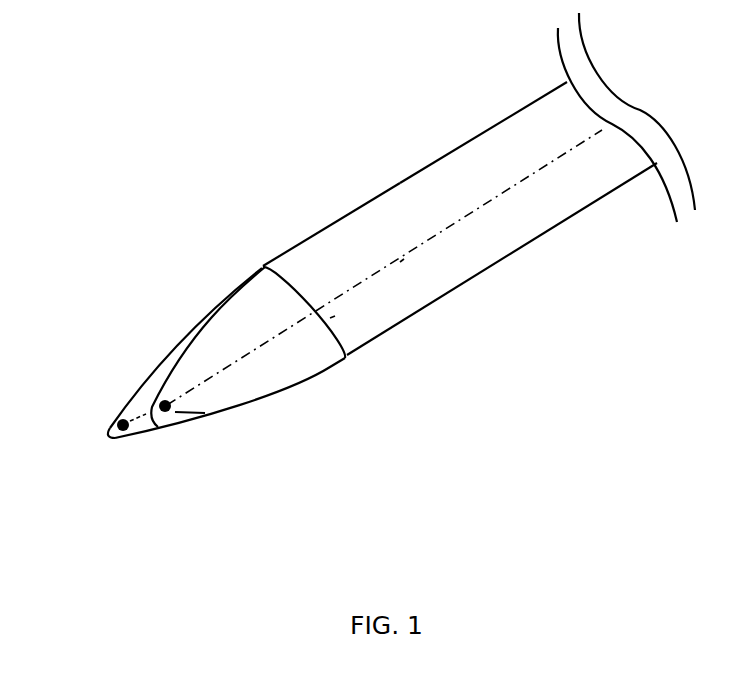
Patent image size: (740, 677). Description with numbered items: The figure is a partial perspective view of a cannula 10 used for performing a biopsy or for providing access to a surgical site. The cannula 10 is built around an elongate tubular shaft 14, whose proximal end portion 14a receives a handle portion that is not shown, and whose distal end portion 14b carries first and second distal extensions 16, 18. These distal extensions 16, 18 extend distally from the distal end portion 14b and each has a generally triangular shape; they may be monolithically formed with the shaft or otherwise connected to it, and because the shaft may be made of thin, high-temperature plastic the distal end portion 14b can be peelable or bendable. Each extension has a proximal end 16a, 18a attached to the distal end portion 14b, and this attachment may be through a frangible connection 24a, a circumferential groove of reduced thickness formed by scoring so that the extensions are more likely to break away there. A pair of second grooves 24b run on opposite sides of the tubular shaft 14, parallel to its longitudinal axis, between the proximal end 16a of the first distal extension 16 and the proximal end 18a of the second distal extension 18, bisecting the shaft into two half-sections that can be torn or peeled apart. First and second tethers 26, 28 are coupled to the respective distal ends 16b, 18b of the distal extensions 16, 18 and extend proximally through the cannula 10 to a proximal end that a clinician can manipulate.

The cannula 10 is at (365, 106).
The tubular shaft 14 is at (543, 240).
The proximal end portion 14a is at (655, 170).
The distal end portion 14b is at (322, 235).
The first distal extension 16 is at (302, 395).
The proximal end of first distal extension 16a is at (333, 365).
The distal end of first distal extension 16b is at (178, 432).
The second distal extension 18 is at (150, 352).
The proximal end of second distal extension 18a is at (205, 315).
The distal end of second distal extension 18b is at (120, 405).
The frangible connection 24a is at (330, 318).
The second grooves 24b is at (457, 148).
The first tether 26 is at (400, 262).
The second tether 28 is at (153, 420).